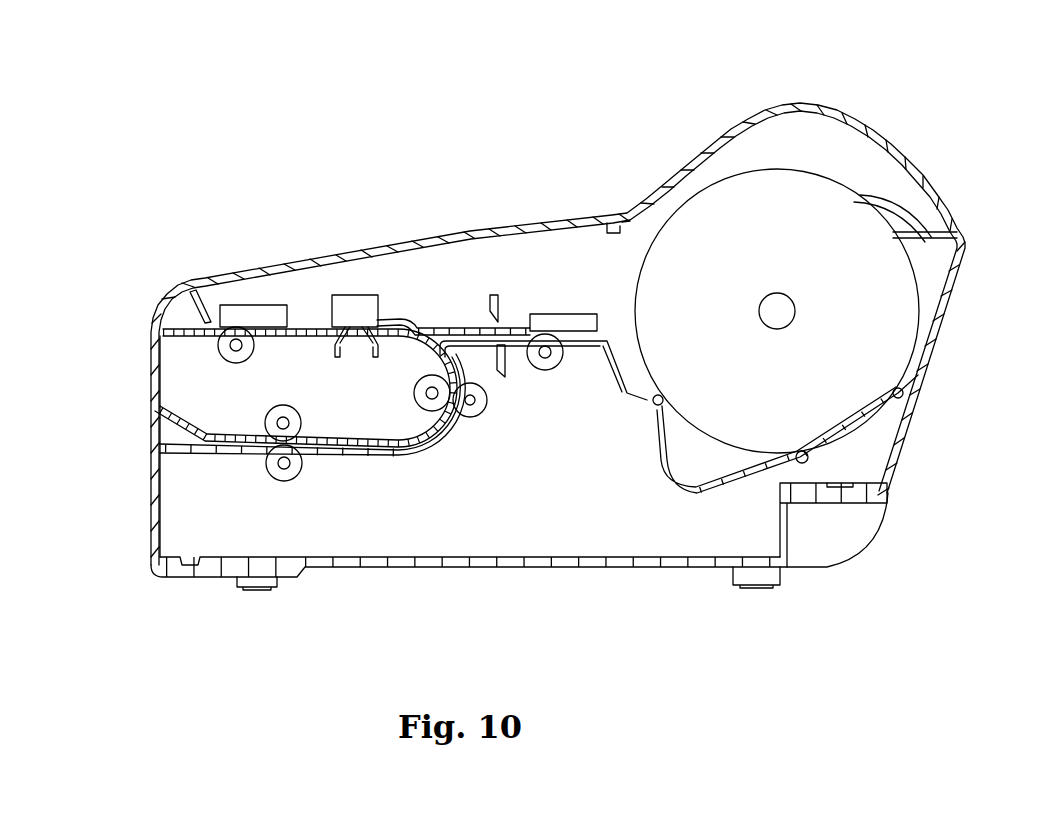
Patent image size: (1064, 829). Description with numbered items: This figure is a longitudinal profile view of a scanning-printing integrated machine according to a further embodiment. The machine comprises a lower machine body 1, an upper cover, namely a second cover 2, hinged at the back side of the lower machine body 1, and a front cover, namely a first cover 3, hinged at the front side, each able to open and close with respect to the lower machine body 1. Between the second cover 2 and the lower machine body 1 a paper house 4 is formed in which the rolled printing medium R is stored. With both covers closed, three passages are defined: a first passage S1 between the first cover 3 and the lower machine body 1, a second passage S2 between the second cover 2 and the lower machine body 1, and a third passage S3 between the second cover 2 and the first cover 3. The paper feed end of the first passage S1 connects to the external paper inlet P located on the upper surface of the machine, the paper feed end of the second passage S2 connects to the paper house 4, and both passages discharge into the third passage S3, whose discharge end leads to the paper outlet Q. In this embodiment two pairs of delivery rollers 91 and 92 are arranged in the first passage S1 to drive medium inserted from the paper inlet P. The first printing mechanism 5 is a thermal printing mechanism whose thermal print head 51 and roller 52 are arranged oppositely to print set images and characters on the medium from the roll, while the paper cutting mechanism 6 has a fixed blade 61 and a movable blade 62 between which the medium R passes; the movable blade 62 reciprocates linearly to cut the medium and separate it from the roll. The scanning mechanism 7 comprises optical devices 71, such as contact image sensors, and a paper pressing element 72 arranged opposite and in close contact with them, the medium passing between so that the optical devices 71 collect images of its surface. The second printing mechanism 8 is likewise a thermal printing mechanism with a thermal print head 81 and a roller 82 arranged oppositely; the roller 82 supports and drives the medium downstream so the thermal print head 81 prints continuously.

The lower machine body 1 is at (476, 600).
The second cover 2 is at (607, 152).
The first cover 3 is at (267, 301).
The paper house 4 is at (747, 403).
The first printing mechanism 5 is at (533, 245).
The thermal print head 51 is at (553, 322).
The roller 52 is at (536, 350).
The paper cutting mechanism 6 is at (552, 483).
The fixed blade 61 is at (504, 350).
The movable blade 62 is at (498, 325).
The scanning mechanism 7 is at (365, 244).
The optical devices 71 is at (347, 305).
The paper pressing element 72 is at (363, 333).
The second printing mechanism 8 is at (229, 264).
The thermal print head 81 is at (257, 320).
The roller 82 is at (230, 333).
The delivery rollers 91 is at (283, 470).
The delivery rollers 92 is at (470, 412).
The paper inlet P is at (167, 440).
The paper outlet Q is at (183, 311).
The rolled printing medium R is at (903, 318).
The first passage S1 is at (258, 444).
The second passage S2 is at (487, 340).
The third passage S3 is at (317, 327).